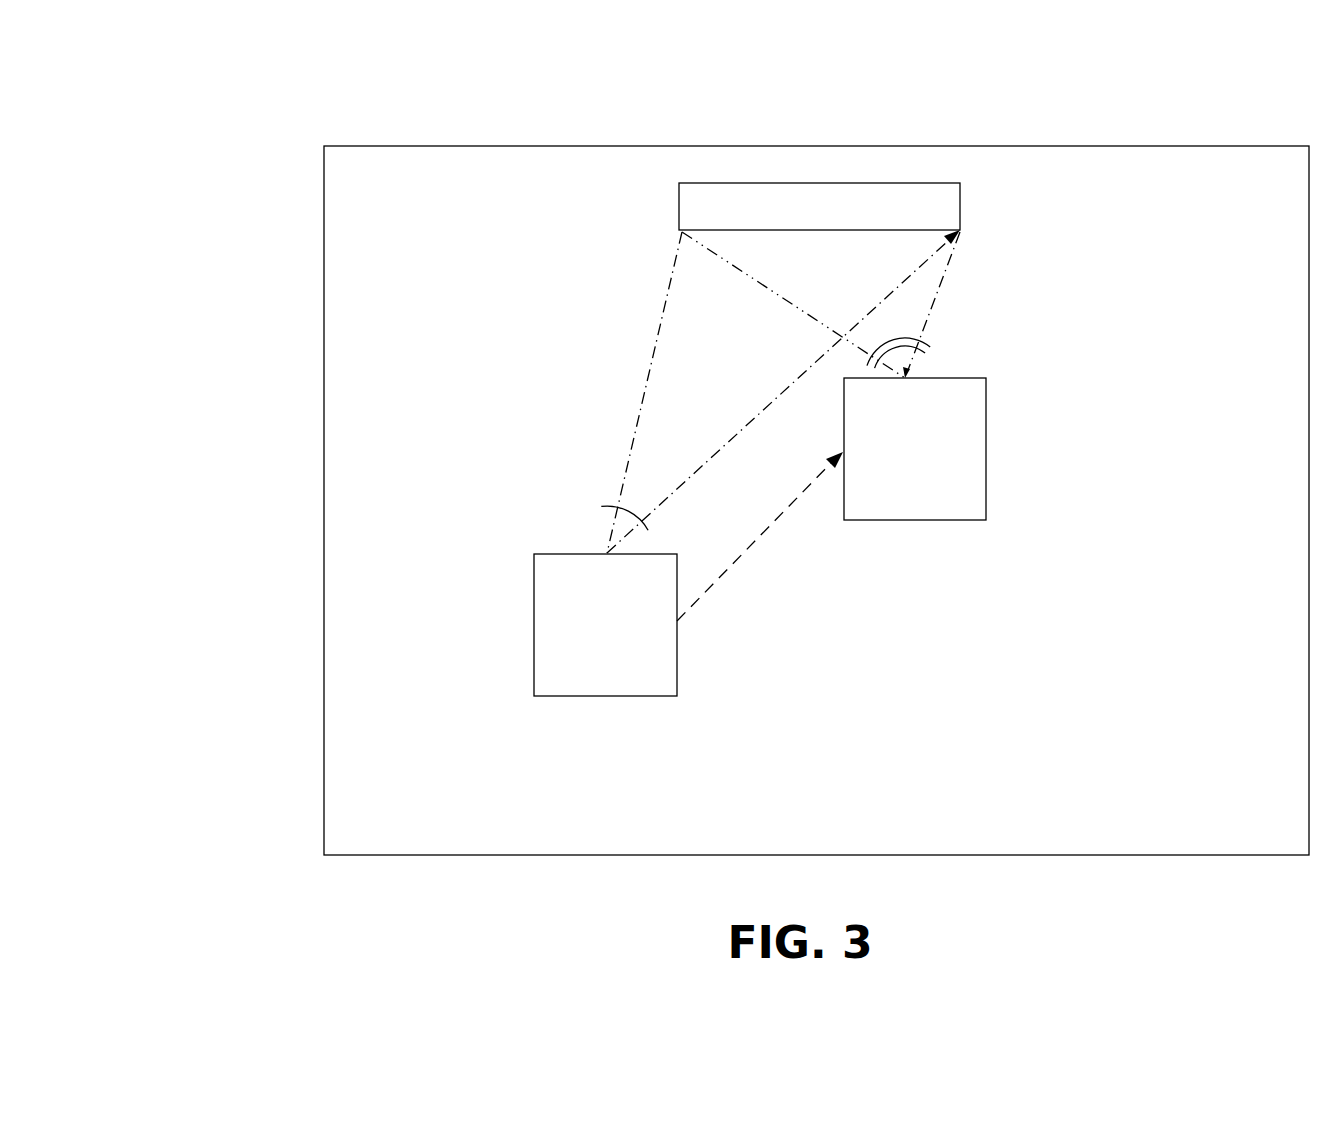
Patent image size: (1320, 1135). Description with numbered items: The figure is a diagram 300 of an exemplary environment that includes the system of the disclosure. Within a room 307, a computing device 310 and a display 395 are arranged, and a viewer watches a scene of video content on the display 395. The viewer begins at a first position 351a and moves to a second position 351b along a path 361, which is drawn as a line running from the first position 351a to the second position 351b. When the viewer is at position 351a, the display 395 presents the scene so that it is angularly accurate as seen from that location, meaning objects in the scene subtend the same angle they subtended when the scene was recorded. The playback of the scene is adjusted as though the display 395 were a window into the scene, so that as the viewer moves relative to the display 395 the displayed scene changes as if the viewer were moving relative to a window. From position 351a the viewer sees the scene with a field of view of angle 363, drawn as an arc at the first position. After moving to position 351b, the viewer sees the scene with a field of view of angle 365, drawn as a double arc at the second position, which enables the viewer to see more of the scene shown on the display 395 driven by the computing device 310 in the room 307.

The diagram 300 is at (260, 108).
The room 307 is at (323, 500).
The computing device 310 is at (819, 206).
The display 395 is at (818, 230).
The position 351a is at (603, 697).
The position 351b is at (905, 521).
The path 361 is at (768, 538).
The angle 363 is at (613, 508).
The angle 365 is at (935, 350).